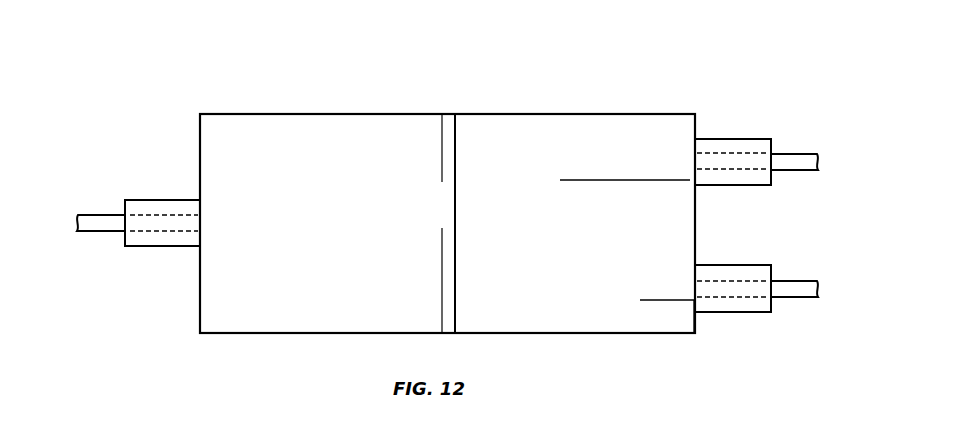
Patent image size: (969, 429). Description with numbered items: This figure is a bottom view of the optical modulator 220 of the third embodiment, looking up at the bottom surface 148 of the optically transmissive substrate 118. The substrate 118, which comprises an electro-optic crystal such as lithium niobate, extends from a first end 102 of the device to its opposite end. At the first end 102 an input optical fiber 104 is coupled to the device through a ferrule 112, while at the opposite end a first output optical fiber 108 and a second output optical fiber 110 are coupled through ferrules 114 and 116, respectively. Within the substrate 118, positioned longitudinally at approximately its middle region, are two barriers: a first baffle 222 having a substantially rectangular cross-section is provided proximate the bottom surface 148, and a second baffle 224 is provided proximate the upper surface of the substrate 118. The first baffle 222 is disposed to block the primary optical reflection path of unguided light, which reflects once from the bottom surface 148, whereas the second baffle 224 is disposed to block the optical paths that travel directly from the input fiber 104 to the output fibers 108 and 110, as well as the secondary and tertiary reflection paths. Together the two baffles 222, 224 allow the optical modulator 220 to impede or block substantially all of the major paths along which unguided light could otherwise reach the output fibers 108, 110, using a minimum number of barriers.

The first end 102 is at (200, 127).
The input optical fiber 104 is at (100, 214).
The first output optical fiber 108 is at (795, 298).
The second output optical fiber 110 is at (796, 154).
The ferrule 112 is at (161, 199).
The ferrule 114 is at (729, 313).
The ferrule 116 is at (729, 139).
The optically transmissive substrate 118 is at (200, 331).
The bottom surface 148 is at (683, 323).
The optical modulator 220 is at (563, 84).
The first baffle 222 is at (449, 114).
The second baffle 224 is at (442, 181).